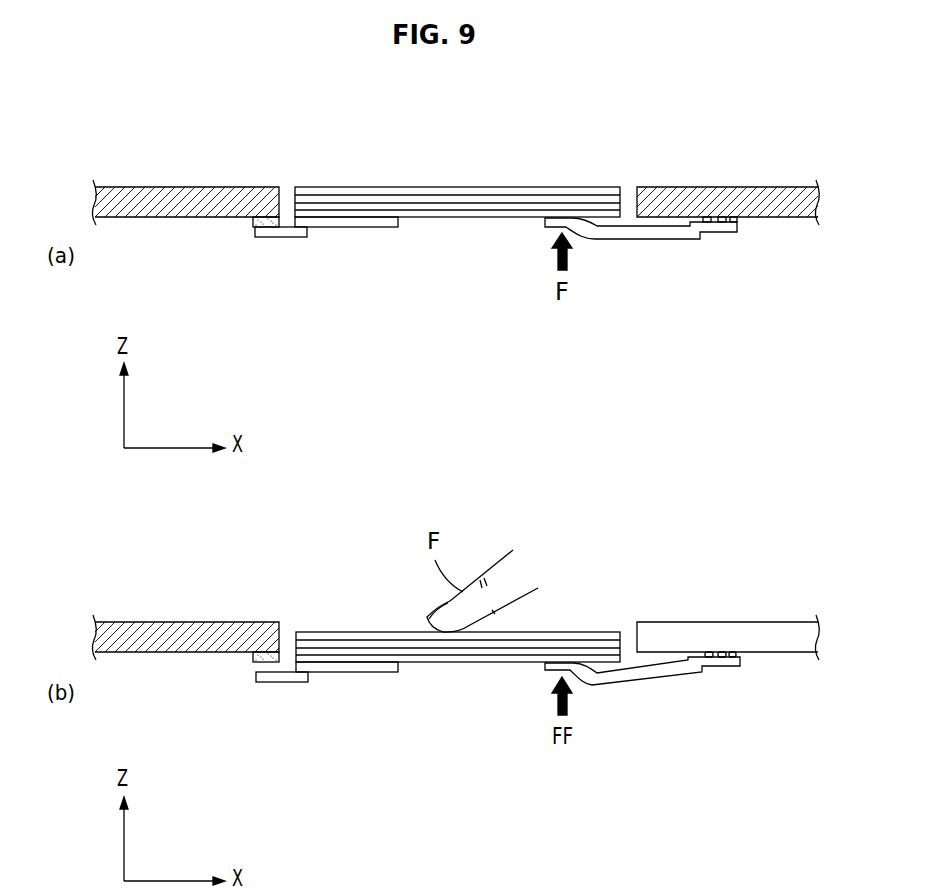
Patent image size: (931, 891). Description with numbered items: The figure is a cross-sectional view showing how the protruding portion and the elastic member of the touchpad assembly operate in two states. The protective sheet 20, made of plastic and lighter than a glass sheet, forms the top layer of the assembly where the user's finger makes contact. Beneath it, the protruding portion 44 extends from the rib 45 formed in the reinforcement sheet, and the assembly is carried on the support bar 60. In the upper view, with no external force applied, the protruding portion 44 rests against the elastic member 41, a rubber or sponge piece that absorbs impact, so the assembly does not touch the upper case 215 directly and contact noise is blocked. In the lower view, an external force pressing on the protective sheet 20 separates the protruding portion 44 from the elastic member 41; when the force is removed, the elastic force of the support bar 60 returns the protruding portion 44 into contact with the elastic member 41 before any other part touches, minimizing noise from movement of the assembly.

The upper case 215 is at (172, 187).
The protective sheet 20 is at (398, 187).
The elastic member 41 is at (253, 224).
The protruding portion 44 is at (272, 237).
The rib 45 is at (356, 227).
The support bar 60 is at (647, 248).